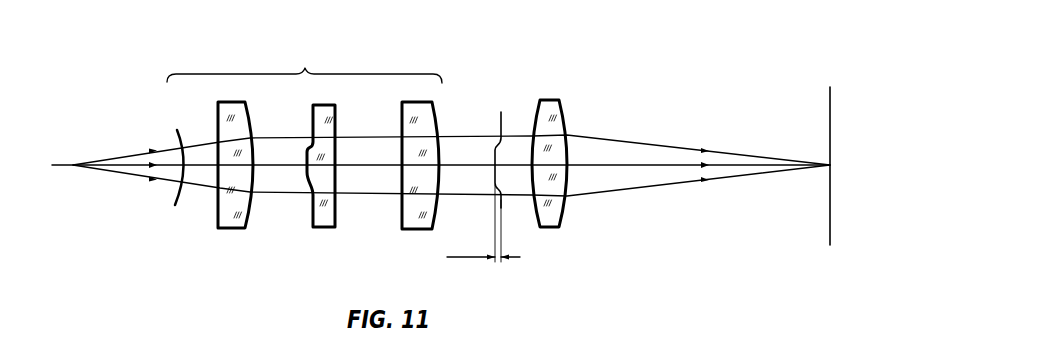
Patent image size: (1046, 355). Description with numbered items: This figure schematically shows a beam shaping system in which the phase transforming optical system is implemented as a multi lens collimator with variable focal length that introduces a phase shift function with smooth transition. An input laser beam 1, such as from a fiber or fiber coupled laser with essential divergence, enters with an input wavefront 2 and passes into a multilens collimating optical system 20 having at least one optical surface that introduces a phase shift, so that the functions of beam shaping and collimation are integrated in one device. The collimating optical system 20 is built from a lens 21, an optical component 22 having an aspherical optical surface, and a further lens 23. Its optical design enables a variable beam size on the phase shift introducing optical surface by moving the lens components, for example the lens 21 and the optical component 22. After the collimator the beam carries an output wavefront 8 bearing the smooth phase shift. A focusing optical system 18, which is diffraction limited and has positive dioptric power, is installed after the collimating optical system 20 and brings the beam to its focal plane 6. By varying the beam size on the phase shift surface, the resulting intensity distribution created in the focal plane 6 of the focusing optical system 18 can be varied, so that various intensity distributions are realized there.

The input laser beam 1 is at (110, 188).
The input wavefront 2 is at (175, 207).
The multi lens collimating optical system 20 is at (305, 68).
The lens 21 is at (218, 230).
The optical component having an aspherical optical surface 22 is at (310, 217).
The lens 23 is at (402, 217).
The output wavefront 8 is at (502, 212).
The focusing optical system 18 is at (563, 212).
The focal plane 6 is at (828, 210).